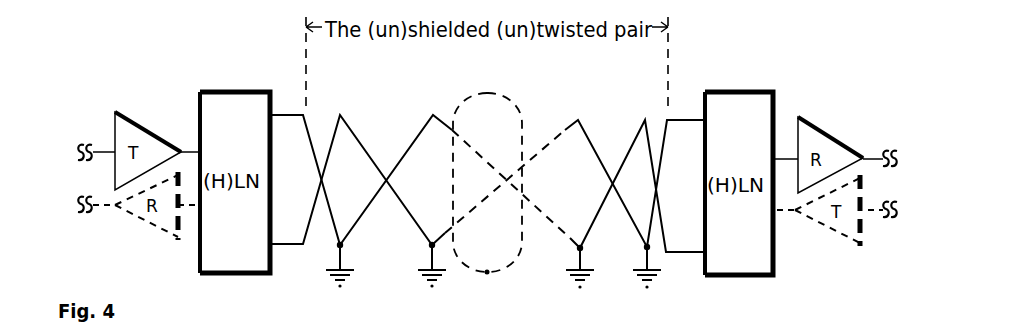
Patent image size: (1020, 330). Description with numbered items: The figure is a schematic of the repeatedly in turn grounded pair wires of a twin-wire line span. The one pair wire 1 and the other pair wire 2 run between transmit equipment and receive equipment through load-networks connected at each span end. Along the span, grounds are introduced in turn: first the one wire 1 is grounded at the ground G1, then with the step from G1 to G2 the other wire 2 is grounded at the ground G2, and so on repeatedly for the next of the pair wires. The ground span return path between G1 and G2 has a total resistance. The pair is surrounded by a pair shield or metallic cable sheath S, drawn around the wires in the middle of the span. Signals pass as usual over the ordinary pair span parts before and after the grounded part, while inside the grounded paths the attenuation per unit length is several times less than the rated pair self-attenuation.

The one pair wire 1 is at (487, 173).
The other pair wire 2 is at (487, 181).
The ground of the one pair wire G1 is at (460, 265).
The ground of the other pair wire G2 is at (526, 265).
The pair shield/metallic cable sheath S is at (487, 184).